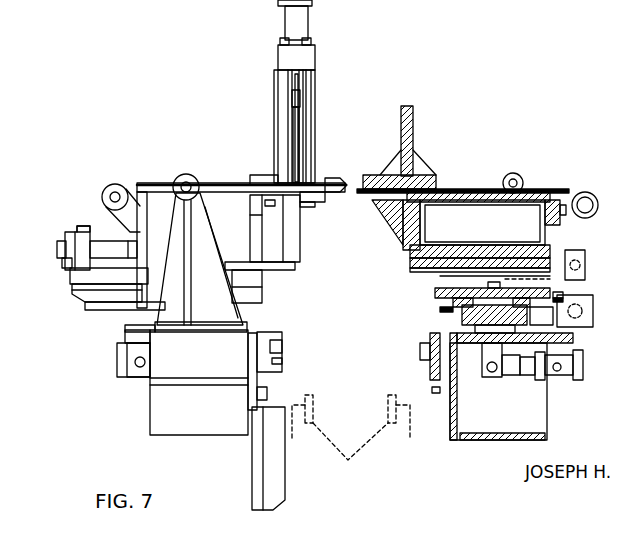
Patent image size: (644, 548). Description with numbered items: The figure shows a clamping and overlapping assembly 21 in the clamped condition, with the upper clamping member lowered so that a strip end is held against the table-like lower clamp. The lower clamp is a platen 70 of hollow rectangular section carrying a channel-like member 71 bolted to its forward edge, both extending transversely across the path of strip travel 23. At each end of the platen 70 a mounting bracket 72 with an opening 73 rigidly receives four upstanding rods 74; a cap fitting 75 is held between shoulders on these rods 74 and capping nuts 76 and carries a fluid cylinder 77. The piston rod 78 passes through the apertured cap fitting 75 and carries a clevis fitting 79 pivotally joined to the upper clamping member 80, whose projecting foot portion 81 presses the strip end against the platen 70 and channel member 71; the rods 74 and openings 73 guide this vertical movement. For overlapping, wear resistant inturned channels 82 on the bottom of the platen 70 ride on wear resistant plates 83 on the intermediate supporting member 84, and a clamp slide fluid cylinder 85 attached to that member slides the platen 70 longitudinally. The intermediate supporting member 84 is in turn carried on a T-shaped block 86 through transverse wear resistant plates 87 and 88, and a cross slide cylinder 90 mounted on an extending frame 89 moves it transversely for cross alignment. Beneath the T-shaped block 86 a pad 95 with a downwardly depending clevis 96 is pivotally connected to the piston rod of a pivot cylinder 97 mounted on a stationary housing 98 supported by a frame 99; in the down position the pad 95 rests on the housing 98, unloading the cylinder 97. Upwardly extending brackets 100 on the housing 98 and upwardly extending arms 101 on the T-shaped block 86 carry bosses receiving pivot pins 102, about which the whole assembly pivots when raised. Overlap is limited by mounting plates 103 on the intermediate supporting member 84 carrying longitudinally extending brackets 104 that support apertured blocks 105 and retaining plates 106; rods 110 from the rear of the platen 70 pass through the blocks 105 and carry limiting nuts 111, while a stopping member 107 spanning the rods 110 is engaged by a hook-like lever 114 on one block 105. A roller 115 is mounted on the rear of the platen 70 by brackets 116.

The clamping and overlapping assembly 21 is at (170, 107).
The path of strip travel 23 is at (148, 184).
The platen 70 is at (262, 249).
The channel-like member 71 is at (322, 201).
The mounting bracket 72 is at (280, 160).
The opening 73 is at (305, 143).
The upstanding rod 74 is at (282, 90).
The cap fitting 75 is at (304, 58).
The capping nut 76 is at (311, 42).
The fluid cylinder 77 is at (300, 22).
The piston rod 78 is at (297, 77).
The clevis fitting 79 is at (300, 102).
The upper clamping member 80 is at (410, 114).
The projecting foot portion 81 is at (327, 180).
The inturned channel 82 is at (418, 255).
The wear resistant plate 83 is at (418, 270).
The intermediate supporting member 84 is at (258, 293).
The clamp slide fluid cylinder 85 is at (586, 267).
The T-shaped block 86 is at (445, 333).
The wear resistant plate 87 is at (453, 302).
The wear resistant plate 88 is at (440, 310).
The extending frame 89 is at (592, 327).
The cross slide cylinder 90 is at (594, 309).
The pad 95 is at (575, 341).
The clevis 96 is at (482, 362).
The pivot cylinder 97 is at (117, 368).
The stationary housing 98 is at (165, 403).
The frame 99 is at (270, 471).
The upwardly extending bracket 100 is at (170, 321).
The upwardly extending arm 101 is at (515, 178).
The pivot pin 102 is at (186, 182).
The mounting plate 103 is at (142, 310).
The longitudinally extending bracket 104 is at (100, 295).
The apertured block 105 is at (80, 276).
The retaining plate 106 is at (62, 264).
The stopping member 107 is at (71, 228).
The rod 110 is at (108, 252).
The limiting nut 111 is at (58, 247).
The hook-like lever 114 is at (84, 226).
The roller 115 is at (112, 185).
The bracket 116 is at (121, 192).